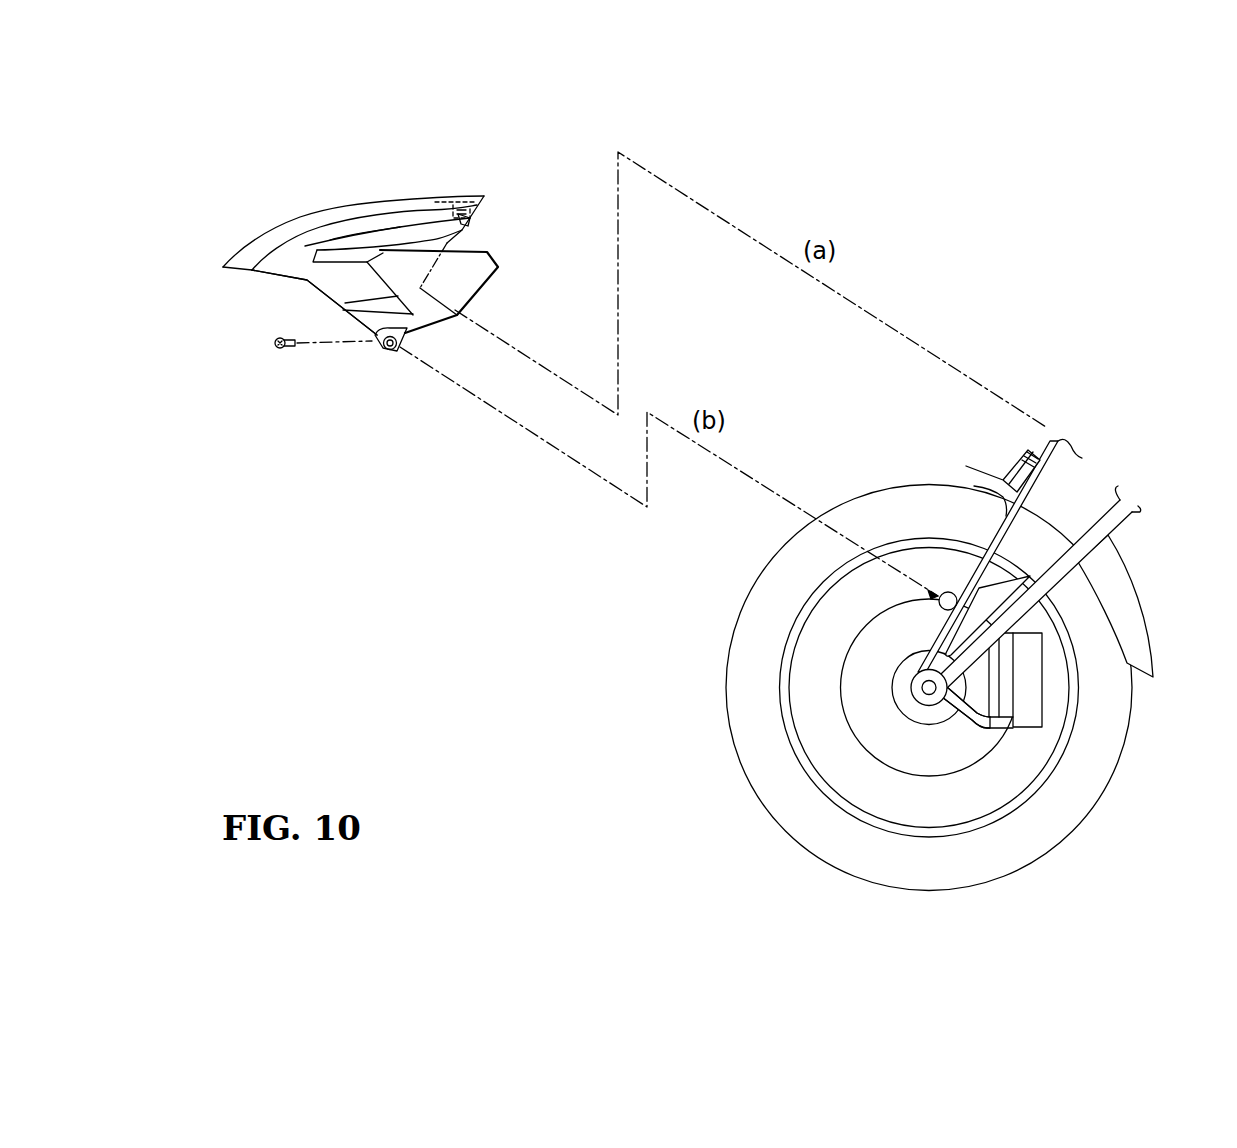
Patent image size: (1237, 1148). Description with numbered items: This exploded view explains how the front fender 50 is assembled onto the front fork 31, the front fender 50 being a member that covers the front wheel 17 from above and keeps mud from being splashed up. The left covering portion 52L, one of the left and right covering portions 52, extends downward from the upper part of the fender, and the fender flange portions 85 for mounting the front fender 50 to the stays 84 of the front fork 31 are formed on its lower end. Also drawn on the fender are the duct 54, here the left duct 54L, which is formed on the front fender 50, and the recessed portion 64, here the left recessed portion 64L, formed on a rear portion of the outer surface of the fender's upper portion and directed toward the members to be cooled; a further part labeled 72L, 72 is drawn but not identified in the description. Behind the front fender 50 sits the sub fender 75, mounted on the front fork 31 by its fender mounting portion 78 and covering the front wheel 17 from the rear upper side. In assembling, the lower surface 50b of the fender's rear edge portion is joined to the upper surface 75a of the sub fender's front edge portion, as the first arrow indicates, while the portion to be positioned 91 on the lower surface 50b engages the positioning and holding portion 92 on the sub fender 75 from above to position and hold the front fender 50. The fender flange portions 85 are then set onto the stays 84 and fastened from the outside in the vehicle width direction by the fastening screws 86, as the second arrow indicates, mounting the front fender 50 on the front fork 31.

The front fender 50 is at (269, 227).
The lower surface of rear edge portion of the front fender 50b is at (486, 196).
The left covering portion 52L is at (288, 302).
The covering portions 52 is at (334, 282).
The left recess 54L is at (377, 220).
The duct 54 is at (381, 277).
The left rib 64L is at (393, 182).
The recessed portions 64 is at (422, 238).
The left mounting portion 72L is at (487, 291).
The mounting portion 72 is at (473, 272).
The fender flange portions 85 is at (391, 351).
The fastening screws 86 is at (281, 350).
The portions to be positioned 91 is at (473, 222).
The front wheel 17 is at (1096, 760).
The front fork 31 is at (1097, 508).
The sub fender 75 is at (1128, 602).
The upper surface of front edge portion of the sub fender 75a is at (1006, 479).
The fender mounting portion 78 is at (1024, 455).
The stays 84 is at (944, 588).
The positioning and holding portions 92 is at (1047, 488).